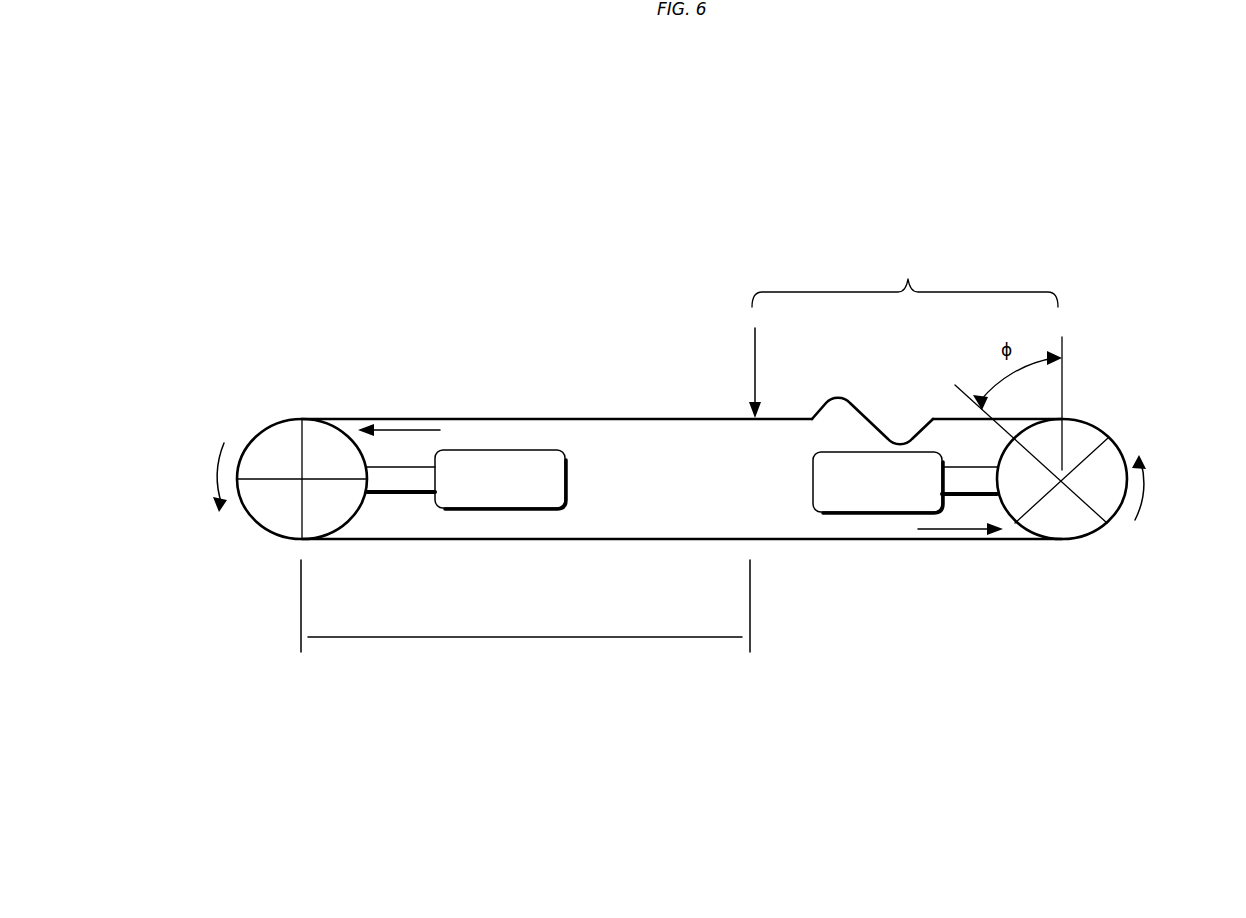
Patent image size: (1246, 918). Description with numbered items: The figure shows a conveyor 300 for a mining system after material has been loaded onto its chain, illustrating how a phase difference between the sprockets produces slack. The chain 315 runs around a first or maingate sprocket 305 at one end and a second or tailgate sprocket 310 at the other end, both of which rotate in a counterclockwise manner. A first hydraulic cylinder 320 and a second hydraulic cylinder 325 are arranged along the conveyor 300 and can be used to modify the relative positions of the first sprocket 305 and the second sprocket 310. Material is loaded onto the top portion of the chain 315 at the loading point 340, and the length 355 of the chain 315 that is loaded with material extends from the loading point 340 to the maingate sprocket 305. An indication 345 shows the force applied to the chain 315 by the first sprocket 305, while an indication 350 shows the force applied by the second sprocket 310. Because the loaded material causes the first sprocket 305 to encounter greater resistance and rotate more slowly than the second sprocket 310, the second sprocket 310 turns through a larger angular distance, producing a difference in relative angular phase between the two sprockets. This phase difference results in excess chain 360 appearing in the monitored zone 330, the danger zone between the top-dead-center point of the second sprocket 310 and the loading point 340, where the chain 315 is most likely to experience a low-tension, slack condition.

The conveyor 300 is at (354, 163).
The first sprocket 305 is at (257, 430).
The second sprocket 310 is at (1112, 440).
The chain 315 is at (538, 418).
The first hydraulic cylinder 320 is at (815, 478).
The second hydraulic cylinder 325 is at (565, 480).
The monitored zone 330 is at (905, 274).
The loading point 340 is at (752, 368).
The indication of force 345 is at (403, 430).
The indication of force 350 is at (957, 530).
The length of chain 355 is at (528, 637).
The excess chain 360 is at (874, 388).